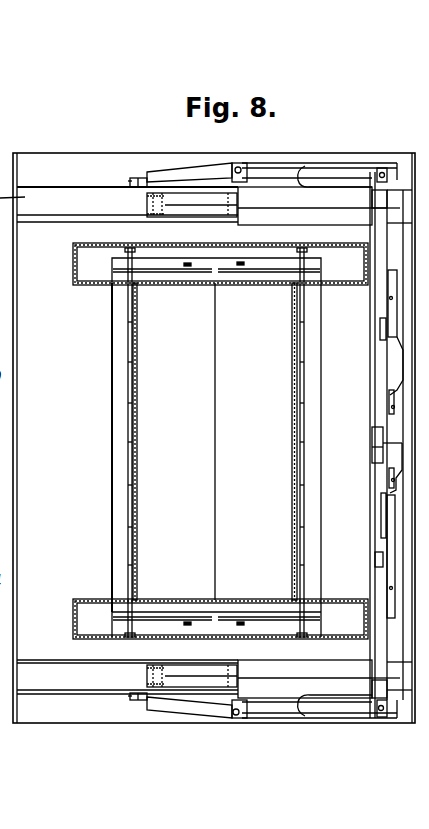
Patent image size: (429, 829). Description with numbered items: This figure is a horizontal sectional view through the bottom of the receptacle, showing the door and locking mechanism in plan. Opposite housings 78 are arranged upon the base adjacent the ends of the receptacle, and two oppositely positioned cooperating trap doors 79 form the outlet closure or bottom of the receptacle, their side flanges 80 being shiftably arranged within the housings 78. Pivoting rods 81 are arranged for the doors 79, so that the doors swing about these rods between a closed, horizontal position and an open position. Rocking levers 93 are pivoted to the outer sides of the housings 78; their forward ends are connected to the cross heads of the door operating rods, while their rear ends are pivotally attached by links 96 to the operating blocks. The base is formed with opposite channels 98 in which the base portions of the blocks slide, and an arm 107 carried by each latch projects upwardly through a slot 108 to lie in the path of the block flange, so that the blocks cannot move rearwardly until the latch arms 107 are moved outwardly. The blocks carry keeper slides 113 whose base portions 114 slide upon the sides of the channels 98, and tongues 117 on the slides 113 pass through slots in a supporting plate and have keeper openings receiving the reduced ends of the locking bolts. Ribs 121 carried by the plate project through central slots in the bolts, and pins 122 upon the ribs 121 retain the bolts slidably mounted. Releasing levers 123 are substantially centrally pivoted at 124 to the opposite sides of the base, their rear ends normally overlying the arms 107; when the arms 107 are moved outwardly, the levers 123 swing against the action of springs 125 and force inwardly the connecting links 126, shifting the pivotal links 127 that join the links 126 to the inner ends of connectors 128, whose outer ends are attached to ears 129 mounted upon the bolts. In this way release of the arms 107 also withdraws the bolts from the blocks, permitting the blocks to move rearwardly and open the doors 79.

The housing 78 is at (73, 263).
The trap door 79 is at (216, 447).
The side flange 80 is at (240, 275).
The pivoting rod 81 is at (110, 277).
The rocking lever 93 is at (147, 194).
The link 96 is at (198, 207).
The channel 98 is at (37, 670).
The latch arm 107 is at (136, 178).
The slot 108 is at (128, 181).
The keeper slide 113 is at (291, 212).
The base portion 114 is at (319, 455).
The tongue 117 is at (372, 228).
The rib 121 is at (392, 340).
The pin 122 is at (390, 298).
The releasing lever 123 is at (357, 167).
The pivot 124 is at (239, 166).
The spring 125 is at (298, 166).
The connecting link 126 is at (400, 443).
The pivotal link 127 is at (390, 418).
The connector 128 is at (378, 370).
The ear 129 is at (384, 565).